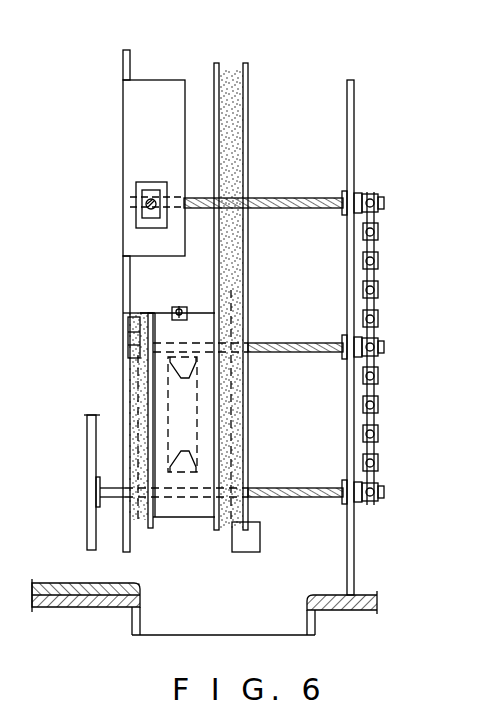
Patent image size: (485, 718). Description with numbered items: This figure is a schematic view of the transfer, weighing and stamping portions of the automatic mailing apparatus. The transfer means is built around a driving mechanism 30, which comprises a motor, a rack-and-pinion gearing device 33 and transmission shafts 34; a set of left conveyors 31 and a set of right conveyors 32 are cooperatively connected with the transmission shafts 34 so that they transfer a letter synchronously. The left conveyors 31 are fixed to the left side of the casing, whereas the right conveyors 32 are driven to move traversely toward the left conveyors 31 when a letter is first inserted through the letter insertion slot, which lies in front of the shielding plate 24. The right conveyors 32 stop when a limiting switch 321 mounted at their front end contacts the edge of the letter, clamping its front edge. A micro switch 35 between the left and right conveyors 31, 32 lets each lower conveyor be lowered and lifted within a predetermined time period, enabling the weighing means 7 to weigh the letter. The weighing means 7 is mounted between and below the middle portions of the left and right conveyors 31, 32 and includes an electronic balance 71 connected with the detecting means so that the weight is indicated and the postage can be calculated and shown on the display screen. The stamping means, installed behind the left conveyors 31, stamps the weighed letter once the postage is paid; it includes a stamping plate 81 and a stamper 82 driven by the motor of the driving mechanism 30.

The stamping plate 81 is at (135, 122).
The stamper 82 is at (142, 193).
The right conveyors 32 is at (236, 183).
The transmission shafts 34 is at (283, 341).
The driving mechanism 30 is at (384, 392).
The rack-and-pinion gearing device 33 is at (378, 308).
The left conveyors 31 is at (128, 323).
The micro switch 35 is at (172, 310).
The weighing means 7 is at (167, 388).
The electronic balance 71 is at (178, 420).
The limiting switch 321 is at (250, 543).
The shielding plate 24 is at (70, 583).